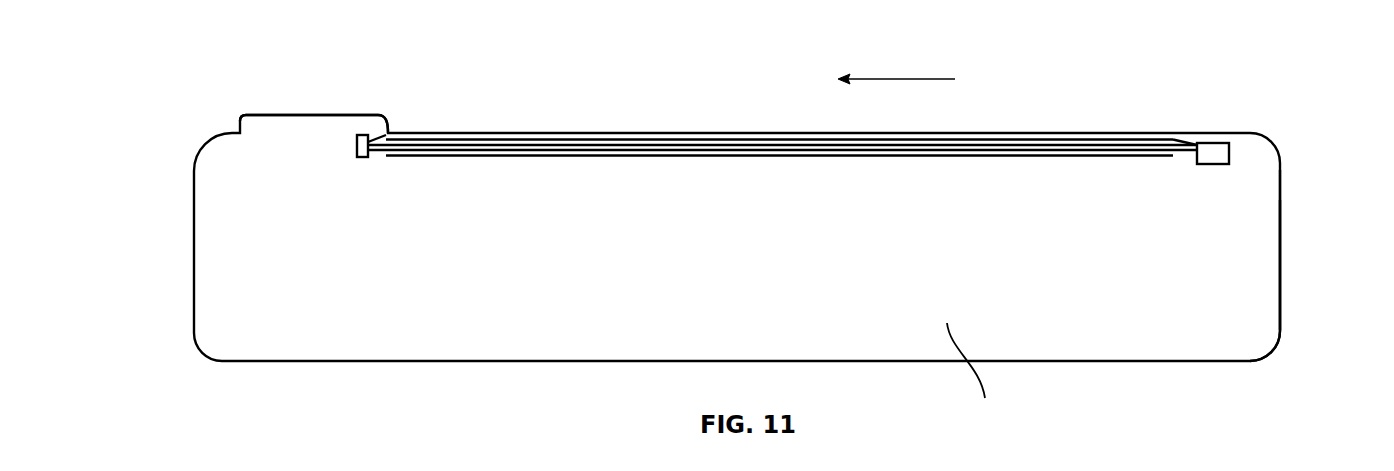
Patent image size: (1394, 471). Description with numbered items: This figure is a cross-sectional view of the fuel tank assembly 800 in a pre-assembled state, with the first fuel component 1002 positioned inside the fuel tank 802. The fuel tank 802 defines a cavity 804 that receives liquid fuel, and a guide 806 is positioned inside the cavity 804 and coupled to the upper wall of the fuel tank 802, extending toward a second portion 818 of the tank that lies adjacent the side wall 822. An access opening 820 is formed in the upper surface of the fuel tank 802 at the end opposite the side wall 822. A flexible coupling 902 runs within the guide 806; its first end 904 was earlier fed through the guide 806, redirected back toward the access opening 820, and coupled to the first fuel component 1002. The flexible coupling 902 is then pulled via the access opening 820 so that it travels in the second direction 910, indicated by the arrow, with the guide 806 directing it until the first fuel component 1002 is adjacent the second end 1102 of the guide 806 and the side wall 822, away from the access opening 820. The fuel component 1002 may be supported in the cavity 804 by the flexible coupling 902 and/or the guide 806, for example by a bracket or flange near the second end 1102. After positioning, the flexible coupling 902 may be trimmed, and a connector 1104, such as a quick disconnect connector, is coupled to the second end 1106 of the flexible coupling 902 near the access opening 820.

The fuel tank assembly 800 is at (1203, 38).
The fuel tank 802 is at (835, 361).
The cavity 804 is at (978, 376).
The guide 806 is at (681, 141).
The second portion 818 is at (1280, 248).
The access opening 820 is at (272, 114).
The side wall 822 is at (1280, 295).
The flexible coupling 902 is at (782, 142).
The first end 904 is at (1195, 143).
The second direction 910 is at (897, 79).
The first fuel component 1002 is at (1208, 142).
The second end 1102 is at (1165, 157).
The connector 1104 is at (363, 136).
The second end 1106 is at (383, 137).